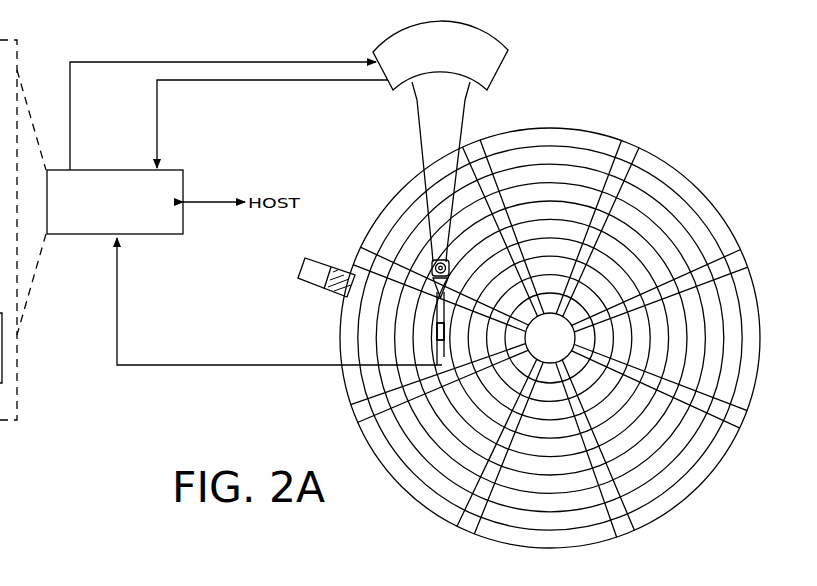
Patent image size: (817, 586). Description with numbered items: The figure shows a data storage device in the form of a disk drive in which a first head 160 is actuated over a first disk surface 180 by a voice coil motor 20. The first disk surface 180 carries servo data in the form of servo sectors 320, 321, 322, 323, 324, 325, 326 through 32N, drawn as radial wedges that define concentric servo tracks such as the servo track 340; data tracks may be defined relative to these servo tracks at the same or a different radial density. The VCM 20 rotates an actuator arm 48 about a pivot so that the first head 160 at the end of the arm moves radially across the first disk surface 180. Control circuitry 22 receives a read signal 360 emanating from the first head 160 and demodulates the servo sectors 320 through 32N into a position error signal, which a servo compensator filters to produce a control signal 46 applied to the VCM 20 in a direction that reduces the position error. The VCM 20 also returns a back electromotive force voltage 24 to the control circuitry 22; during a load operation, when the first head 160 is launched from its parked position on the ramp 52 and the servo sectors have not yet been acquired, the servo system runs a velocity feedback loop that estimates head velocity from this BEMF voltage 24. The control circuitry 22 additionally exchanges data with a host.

The voice coil motor 20 is at (383, 53).
The control signal 46 is at (70, 88).
The back electromotive force voltage 24 is at (157, 125).
The control circuitry 22 is at (166, 236).
The actuator arm 48 is at (422, 154).
The first head 160 is at (433, 329).
The first disk surface 180 is at (695, 171).
The servo track 340 is at (550, 150).
The read signal 360 is at (238, 365).
The ramp 52 is at (313, 287).
The servo sector 320 is at (628, 146).
The servo sector 321 is at (738, 262).
The servo sector 322 is at (738, 419).
The servo sector 323 is at (625, 527).
The servo sector 324 is at (470, 524).
The servo sector 325 is at (359, 416).
The servo sector 326 is at (361, 254).
The servo sector 32N is at (475, 145).